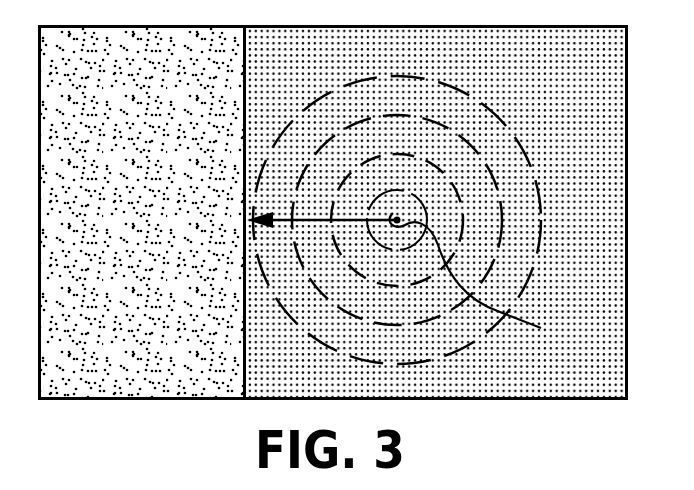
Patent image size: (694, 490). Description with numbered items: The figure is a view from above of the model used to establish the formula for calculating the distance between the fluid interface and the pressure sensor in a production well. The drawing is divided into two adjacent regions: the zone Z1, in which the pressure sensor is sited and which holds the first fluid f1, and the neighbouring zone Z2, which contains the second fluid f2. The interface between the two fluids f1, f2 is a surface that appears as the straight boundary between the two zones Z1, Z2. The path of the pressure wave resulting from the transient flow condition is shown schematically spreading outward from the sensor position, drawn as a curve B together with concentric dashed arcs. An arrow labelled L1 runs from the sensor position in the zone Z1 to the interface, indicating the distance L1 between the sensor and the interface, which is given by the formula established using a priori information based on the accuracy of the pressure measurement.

The zone Z1 is at (555, 383).
The zone Z2 is at (85, 388).
The first fluid f1 is at (564, 69).
The second fluid f2 is at (97, 72).
The distance between the sensor and the interface L1 is at (322, 209).
The spiral trajectory B is at (475, 276).